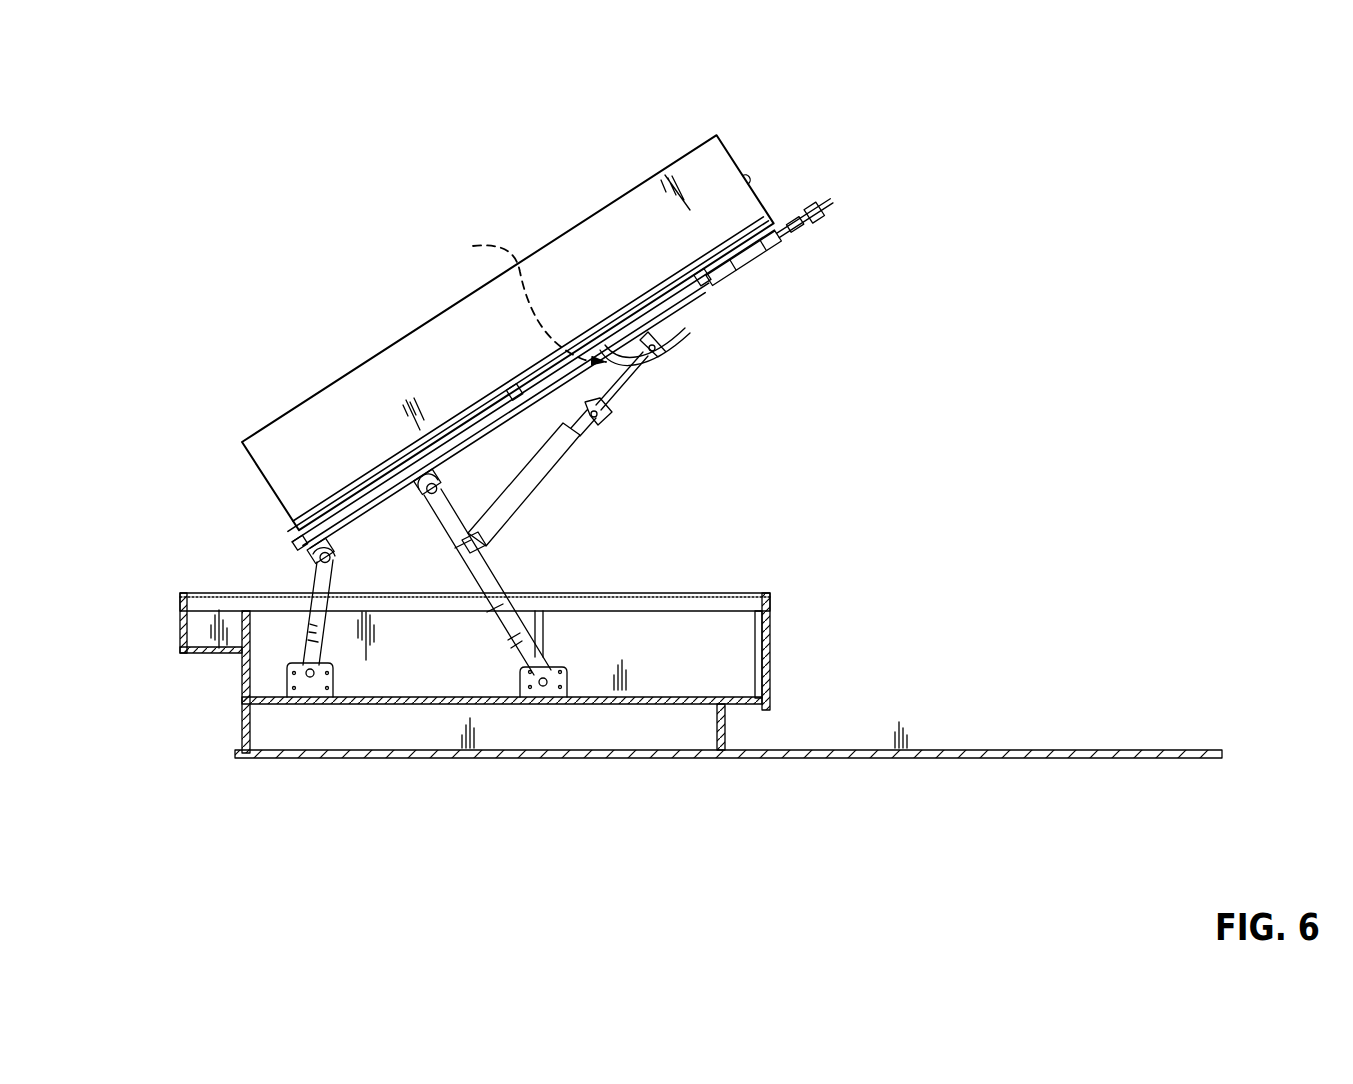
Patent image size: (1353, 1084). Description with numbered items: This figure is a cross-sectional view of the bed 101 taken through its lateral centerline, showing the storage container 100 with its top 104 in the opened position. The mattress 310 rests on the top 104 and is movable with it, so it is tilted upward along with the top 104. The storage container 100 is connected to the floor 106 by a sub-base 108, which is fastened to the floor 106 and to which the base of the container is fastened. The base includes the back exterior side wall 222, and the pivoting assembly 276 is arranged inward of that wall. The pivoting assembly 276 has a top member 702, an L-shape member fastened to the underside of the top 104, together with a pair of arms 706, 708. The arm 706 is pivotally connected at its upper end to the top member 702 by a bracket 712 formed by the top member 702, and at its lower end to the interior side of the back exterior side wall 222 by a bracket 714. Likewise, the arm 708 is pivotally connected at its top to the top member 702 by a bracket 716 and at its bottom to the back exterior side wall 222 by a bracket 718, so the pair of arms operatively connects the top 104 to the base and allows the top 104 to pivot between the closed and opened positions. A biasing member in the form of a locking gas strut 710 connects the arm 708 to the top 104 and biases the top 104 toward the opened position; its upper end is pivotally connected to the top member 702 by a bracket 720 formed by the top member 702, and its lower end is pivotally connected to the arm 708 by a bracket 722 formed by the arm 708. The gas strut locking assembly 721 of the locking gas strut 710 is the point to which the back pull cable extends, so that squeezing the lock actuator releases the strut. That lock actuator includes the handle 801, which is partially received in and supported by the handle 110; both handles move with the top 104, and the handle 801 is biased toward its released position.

The bed 101 is at (200, 143).
The top 104 is at (815, 147).
The mattress 310 is at (636, 186).
The gas strut locking assembly 721 is at (510, 295).
The top member 702 is at (715, 302).
The handle 110 is at (838, 207).
The handle 801 is at (832, 221).
The bracket 720 is at (674, 328).
The locking gas strut 710 is at (567, 448).
The bracket 722 is at (492, 548).
The pivoting assembly 276 is at (720, 533).
The arm 708 is at (497, 578).
The bracket 712 is at (309, 562).
The arm 706 is at (307, 627).
The bracket 716 is at (428, 522).
The back exterior side wall 222 is at (710, 595).
The storage container 100 is at (797, 667).
The sub-base 108 is at (728, 736).
The floor 106 is at (1200, 752).
The bracket 714 is at (315, 694).
The bracket 718 is at (548, 694).